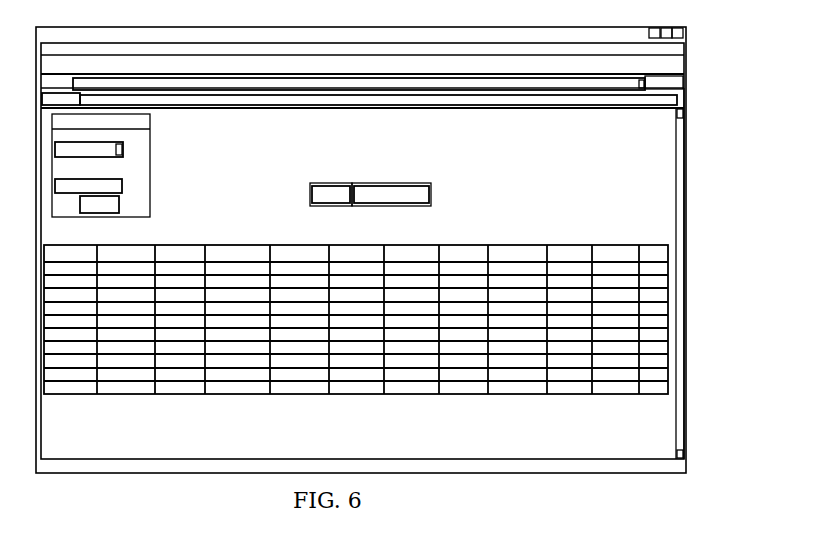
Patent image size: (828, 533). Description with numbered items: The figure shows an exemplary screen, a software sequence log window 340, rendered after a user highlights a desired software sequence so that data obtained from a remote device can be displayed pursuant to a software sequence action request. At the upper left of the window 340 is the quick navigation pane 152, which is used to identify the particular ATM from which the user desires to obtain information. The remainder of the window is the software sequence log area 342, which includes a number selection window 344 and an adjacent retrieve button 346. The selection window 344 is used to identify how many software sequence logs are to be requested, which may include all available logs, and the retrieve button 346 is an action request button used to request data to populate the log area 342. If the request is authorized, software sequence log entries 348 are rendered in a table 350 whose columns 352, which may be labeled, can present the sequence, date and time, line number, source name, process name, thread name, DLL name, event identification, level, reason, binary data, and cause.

The software sequence log window 340 is at (659, 22).
The software sequence log area 342 is at (570, 153).
The number selection window 344 is at (340, 183).
The retrieve button 346 is at (393, 183).
The software sequence log entries 348 is at (670, 295).
The table 350 is at (298, 409).
The columns 352 is at (167, 245).
The quick navigation pane 152 is at (160, 143).